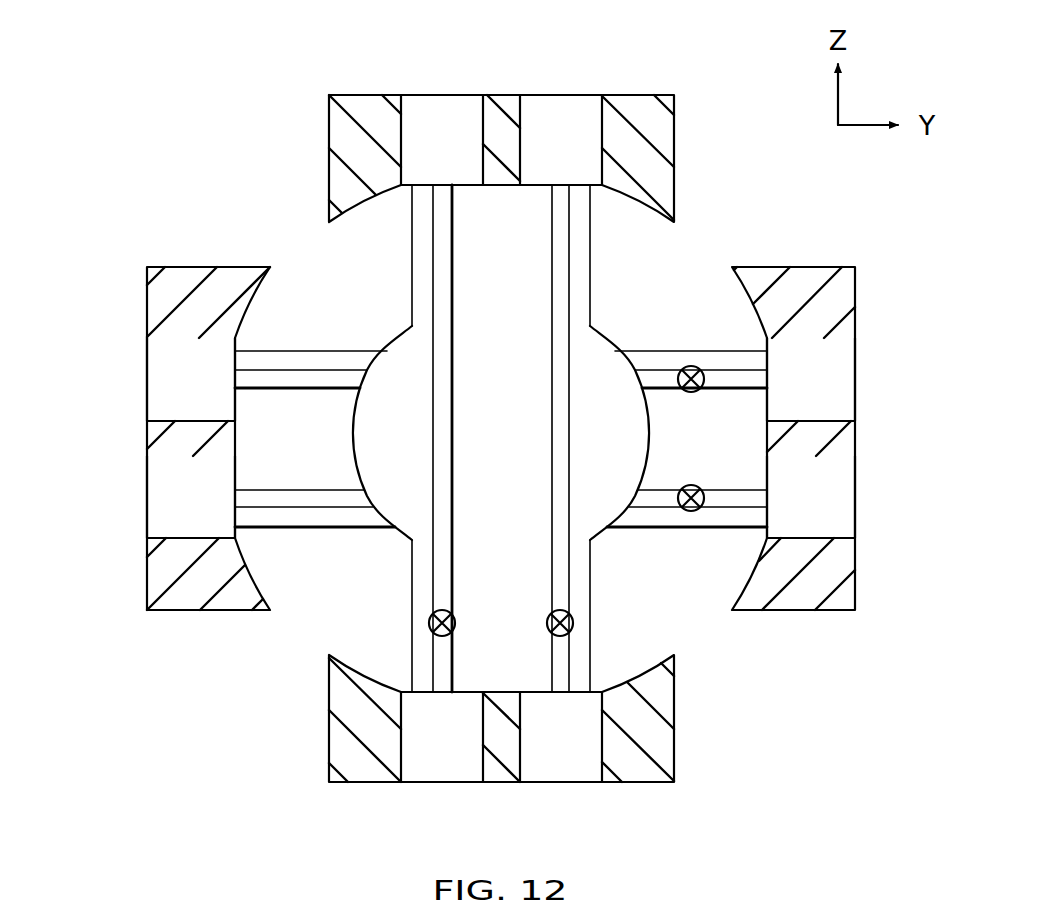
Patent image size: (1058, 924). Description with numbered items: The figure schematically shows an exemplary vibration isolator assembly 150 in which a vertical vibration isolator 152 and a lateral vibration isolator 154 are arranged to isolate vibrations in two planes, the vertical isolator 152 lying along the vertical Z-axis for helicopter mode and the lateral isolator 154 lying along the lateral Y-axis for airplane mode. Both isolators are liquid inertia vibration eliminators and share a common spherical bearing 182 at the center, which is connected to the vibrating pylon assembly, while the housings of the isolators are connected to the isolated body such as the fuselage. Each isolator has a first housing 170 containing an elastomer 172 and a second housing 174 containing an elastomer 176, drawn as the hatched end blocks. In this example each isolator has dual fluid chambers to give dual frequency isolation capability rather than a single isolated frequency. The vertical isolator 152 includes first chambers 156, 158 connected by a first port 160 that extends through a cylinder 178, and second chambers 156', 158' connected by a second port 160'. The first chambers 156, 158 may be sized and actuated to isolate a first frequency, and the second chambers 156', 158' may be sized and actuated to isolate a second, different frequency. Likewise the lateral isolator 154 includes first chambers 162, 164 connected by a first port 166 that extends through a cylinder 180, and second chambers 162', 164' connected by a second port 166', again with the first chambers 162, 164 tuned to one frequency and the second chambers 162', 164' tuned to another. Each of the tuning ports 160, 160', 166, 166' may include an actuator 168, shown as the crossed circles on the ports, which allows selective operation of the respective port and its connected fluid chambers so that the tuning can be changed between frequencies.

The vibration isolator assembly 150 is at (224, 77).
The vertical vibration isolator 152 is at (640, 68).
The lateral vibration isolator 154 is at (117, 303).
The first fluid chamber 156 is at (442, 111).
The second fluid chamber 156' is at (561, 111).
The first fluid chamber 158 is at (442, 767).
The second fluid chamber 158' is at (561, 767).
The first tuning port 160 is at (479, 438).
The second tuning port 160' is at (519, 438).
The first fluid chamber 162 is at (152, 379).
The second fluid chamber 162' is at (149, 497).
The first fluid chamber 164 is at (849, 379).
The second fluid chamber 164' is at (853, 497).
The first tuning port 166 is at (501, 400).
The second tuning port 166' is at (501, 466).
The actuator 168 is at (691, 393).
The first housing 170 is at (681, 125).
The elastomer 172 is at (364, 105).
The second housing 174 is at (823, 263).
The elastomer 176 is at (847, 300).
The cylinder 178 is at (412, 262).
The cylinder 180 is at (315, 532).
The spherical bearing 182 is at (606, 336).